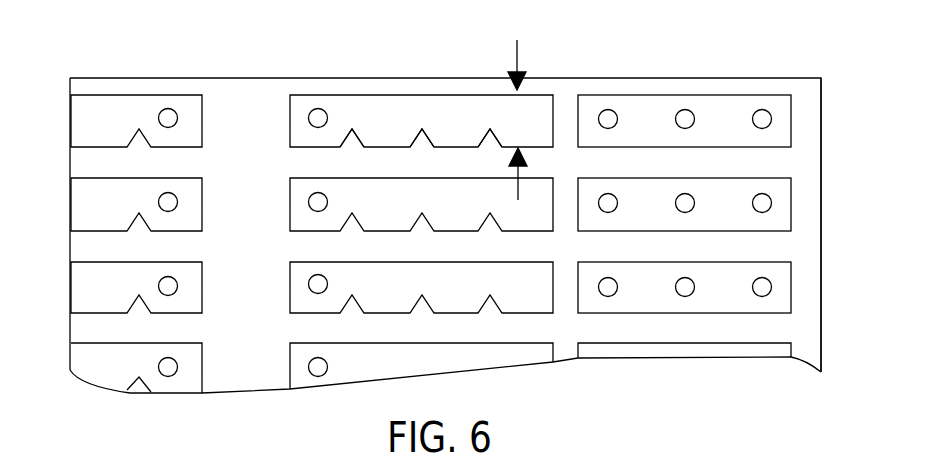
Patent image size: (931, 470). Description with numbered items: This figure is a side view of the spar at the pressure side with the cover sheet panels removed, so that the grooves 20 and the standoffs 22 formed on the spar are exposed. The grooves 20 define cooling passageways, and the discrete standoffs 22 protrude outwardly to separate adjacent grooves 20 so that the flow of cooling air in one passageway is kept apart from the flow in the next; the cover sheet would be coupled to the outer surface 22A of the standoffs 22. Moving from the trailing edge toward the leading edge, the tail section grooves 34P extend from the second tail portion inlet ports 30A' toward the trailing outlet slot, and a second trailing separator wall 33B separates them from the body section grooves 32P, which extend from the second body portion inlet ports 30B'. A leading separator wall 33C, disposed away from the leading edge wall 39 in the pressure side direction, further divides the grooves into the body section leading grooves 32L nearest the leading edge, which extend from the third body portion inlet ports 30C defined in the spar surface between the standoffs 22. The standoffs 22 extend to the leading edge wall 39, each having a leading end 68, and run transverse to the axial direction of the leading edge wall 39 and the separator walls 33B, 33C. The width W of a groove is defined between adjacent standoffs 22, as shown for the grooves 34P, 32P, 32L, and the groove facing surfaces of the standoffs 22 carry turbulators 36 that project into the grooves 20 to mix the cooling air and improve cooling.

The grooves 20 is at (356, 90).
The standoffs 22 is at (300, 163).
The outer surface of the standoffs 22A is at (537, 152).
The second tail portion inlet ports 30A' is at (196, 208).
The second body portion inlet ports 30B' is at (281, 243).
The third body portion inlet ports 30C is at (763, 111).
The body section leading grooves 32L is at (780, 117).
The body section grooves 32P is at (397, 110).
The second trailing separator wall 33B is at (243, 110).
The leading separator wall 33C is at (565, 110).
The tail section grooves 34P is at (78, 185).
The turbulator 36 is at (423, 132).
The leading edge wall 39 is at (808, 112).
The leading end 68 is at (778, 162).
The width of the grooves W is at (520, 58).